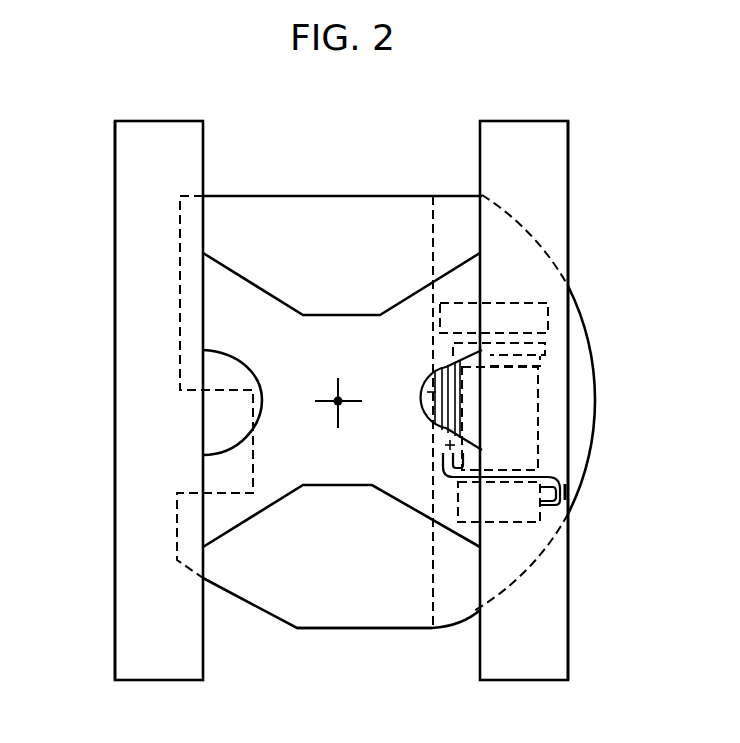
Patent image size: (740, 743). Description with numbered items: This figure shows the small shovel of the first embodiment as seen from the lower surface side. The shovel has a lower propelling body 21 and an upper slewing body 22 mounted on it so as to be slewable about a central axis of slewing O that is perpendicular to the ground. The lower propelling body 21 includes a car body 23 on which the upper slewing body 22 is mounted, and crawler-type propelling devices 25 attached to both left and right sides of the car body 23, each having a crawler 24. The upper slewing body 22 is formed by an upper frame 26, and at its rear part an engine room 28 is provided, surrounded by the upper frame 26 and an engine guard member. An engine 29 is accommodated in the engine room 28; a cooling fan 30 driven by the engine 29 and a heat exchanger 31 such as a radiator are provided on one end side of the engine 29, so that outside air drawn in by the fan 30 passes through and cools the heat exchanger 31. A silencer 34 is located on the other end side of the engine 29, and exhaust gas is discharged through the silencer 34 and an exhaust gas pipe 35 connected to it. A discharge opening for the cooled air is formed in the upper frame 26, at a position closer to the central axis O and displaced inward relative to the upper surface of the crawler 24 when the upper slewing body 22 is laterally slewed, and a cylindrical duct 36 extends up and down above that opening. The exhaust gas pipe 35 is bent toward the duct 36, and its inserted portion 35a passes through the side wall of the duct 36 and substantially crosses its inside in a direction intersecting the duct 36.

The lower propelling body 21 is at (592, 271).
The upper slewing body 22 is at (380, 640).
The car body 23 is at (321, 314).
The crawler 24 is at (114, 156).
The crawler-type propelling device 25 is at (113, 625).
The upper frame 26 is at (349, 196).
The engine room 28 is at (465, 218).
The engine 29 is at (540, 410).
The cooling fan 30 is at (546, 345).
The heat exchanger 31 is at (550, 322).
The silencer 34 is at (523, 523).
The exhaust gas pipe 35 is at (568, 490).
The inserted portion 35a is at (427, 386).
The duct 36 is at (427, 418).
The central axis of slewing O is at (335, 406).